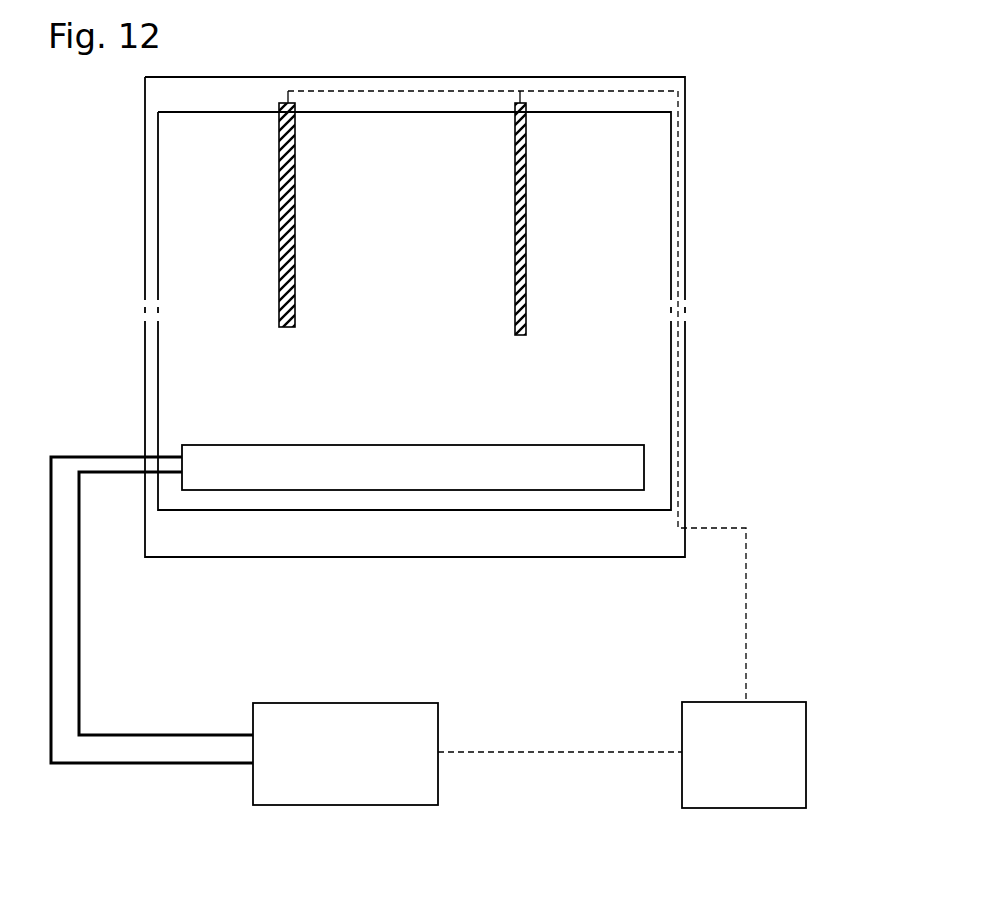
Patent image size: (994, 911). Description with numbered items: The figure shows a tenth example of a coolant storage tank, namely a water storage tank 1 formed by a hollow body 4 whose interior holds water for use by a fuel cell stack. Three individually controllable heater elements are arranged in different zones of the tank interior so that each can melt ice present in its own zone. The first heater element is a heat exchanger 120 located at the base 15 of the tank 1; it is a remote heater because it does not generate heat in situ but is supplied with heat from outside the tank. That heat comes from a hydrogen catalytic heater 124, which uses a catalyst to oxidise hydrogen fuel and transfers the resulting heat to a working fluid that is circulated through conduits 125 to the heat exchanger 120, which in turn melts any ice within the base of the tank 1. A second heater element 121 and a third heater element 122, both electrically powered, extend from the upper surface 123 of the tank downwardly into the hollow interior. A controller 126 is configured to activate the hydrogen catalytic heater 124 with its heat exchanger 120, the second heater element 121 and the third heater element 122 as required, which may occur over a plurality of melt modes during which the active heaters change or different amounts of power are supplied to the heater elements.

The water storage tank 1 is at (770, 167).
The hollow body 4 is at (672, 377).
The base of the water storage tank 15 is at (697, 505).
The heat exchanger 120 is at (226, 463).
The second heater element 121 is at (278, 228).
The third heater element 122 is at (515, 227).
The upper surface of the tank 123 is at (228, 112).
The hydrogen catalytic heater 124 is at (345, 754).
The conduits 125 is at (155, 768).
The controller 126 is at (709, 768).